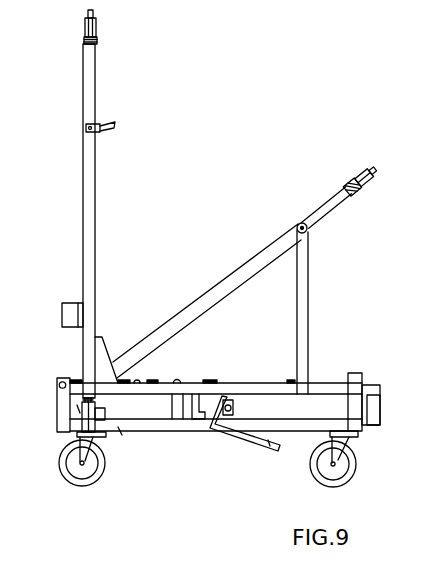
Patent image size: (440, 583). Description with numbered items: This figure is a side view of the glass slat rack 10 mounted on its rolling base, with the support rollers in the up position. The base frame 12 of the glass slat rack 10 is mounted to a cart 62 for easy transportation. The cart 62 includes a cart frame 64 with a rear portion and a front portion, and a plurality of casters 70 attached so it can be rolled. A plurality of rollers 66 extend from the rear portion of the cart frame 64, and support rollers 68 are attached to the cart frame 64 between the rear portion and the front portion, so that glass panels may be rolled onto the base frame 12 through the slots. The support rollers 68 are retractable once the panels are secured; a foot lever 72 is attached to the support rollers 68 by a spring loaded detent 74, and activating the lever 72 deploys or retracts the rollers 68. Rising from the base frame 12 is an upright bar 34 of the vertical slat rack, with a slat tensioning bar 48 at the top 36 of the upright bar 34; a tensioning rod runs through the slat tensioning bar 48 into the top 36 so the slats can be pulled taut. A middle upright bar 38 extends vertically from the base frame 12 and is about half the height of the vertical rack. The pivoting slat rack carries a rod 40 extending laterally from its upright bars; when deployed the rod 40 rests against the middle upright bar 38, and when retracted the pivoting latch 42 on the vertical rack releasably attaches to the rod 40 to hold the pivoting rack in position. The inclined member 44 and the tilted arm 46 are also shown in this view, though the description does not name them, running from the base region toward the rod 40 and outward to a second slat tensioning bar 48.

The glass slat rack 10 is at (178, 98).
The base frame 12 is at (372, 388).
The upright bar 34 is at (84, 218).
The top of upright bar 36 is at (84, 43).
The middle upright bar 38 is at (309, 320).
The rod 40 is at (297, 225).
The pivoting latch 42 is at (100, 124).
The diagonal brace 44 is at (207, 303).
The boom arm 46 is at (350, 185).
The slat tensioning bar 48 is at (96, 28).
The cart 62 is at (193, 490).
The cart frame 64 is at (120, 427).
The rollers 66 is at (63, 380).
The support rollers 68 is at (177, 380).
The casters 70 is at (83, 483).
The foot lever 72 is at (250, 440).
The spring loaded detent 74 is at (232, 408).